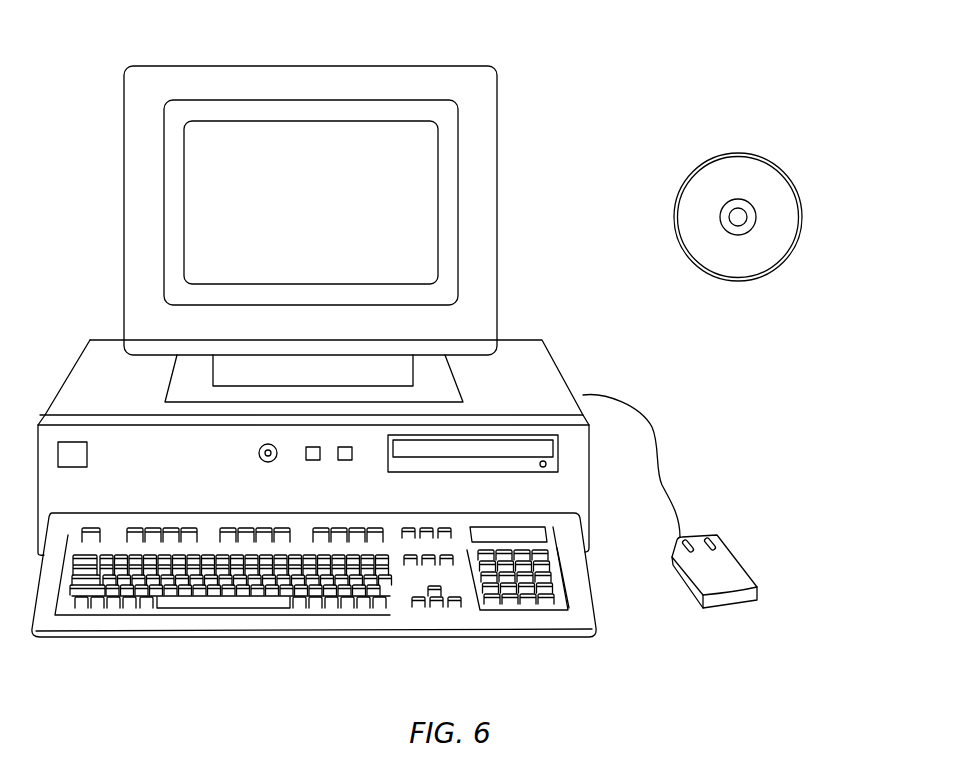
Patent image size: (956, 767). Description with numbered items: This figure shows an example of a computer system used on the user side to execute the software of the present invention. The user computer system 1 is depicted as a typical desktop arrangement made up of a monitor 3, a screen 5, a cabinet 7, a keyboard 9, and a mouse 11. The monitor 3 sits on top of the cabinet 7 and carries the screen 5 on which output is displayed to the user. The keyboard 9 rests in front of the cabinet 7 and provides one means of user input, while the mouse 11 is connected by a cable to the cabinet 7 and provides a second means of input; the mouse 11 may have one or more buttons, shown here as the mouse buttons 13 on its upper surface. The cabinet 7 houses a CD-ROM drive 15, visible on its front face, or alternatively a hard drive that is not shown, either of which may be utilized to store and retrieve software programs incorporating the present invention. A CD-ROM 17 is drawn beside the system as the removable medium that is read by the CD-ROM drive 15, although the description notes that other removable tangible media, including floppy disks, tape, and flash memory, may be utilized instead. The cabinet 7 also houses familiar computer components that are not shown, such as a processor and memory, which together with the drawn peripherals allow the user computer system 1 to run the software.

The user computer system 1 is at (570, 57).
The monitor 3 is at (498, 135).
The screen 5 is at (425, 211).
The cabinet 7 is at (555, 357).
The keyboard 9 is at (462, 637).
The mouse 11 is at (738, 554).
The mouse buttons 13 is at (688, 542).
The CD-ROM drive 15 is at (558, 453).
The CD-ROM 17 is at (803, 212).